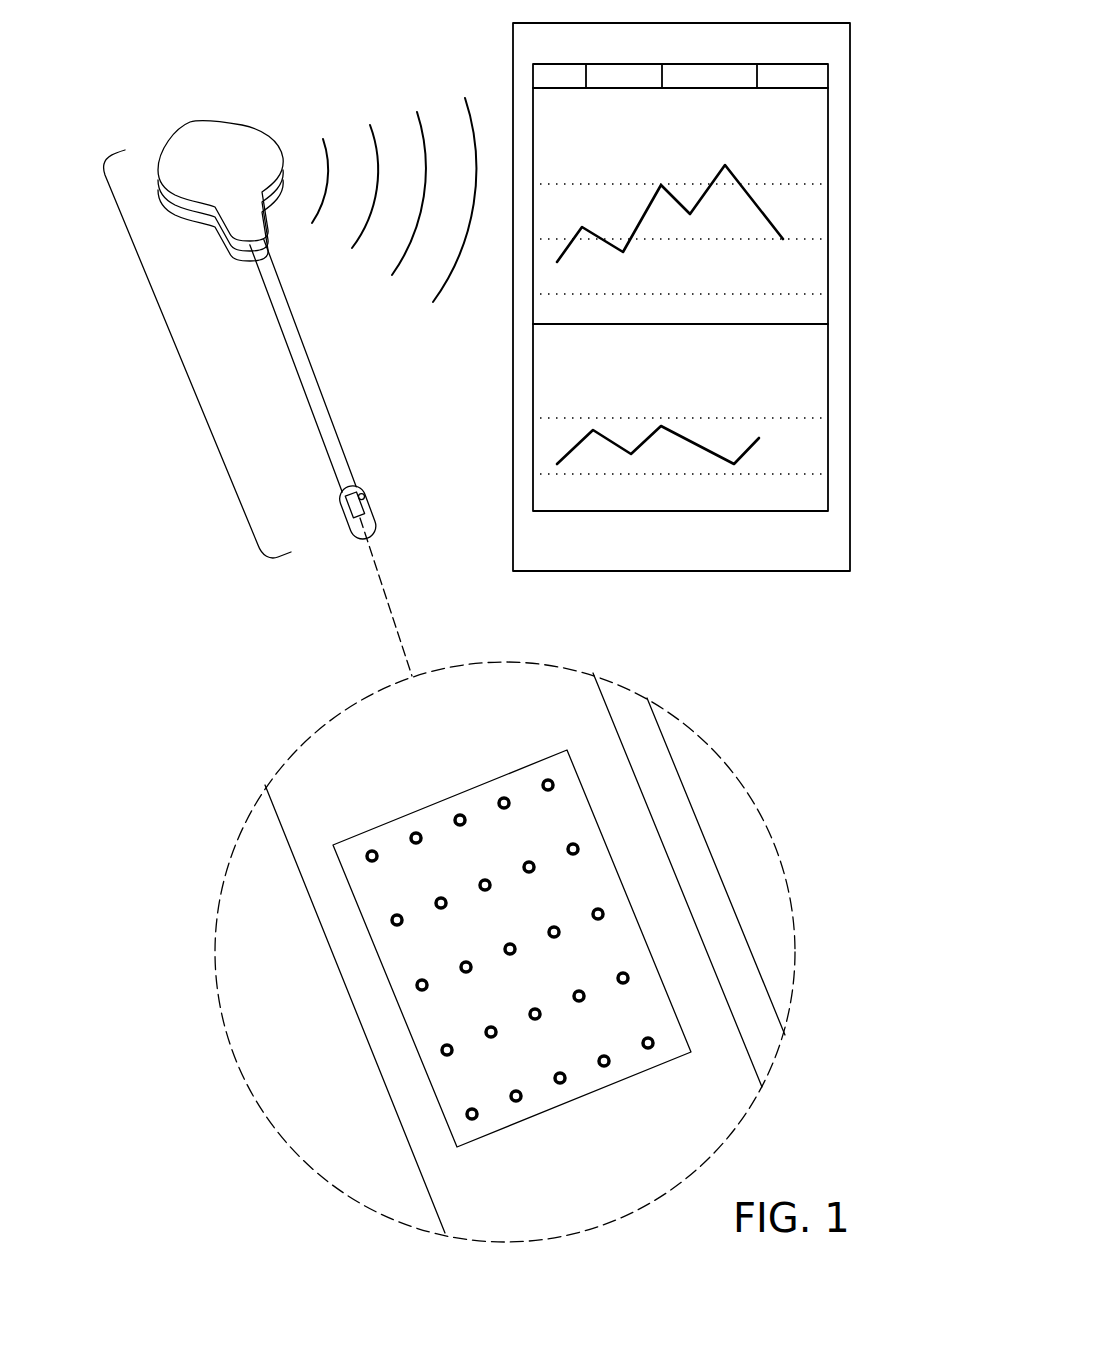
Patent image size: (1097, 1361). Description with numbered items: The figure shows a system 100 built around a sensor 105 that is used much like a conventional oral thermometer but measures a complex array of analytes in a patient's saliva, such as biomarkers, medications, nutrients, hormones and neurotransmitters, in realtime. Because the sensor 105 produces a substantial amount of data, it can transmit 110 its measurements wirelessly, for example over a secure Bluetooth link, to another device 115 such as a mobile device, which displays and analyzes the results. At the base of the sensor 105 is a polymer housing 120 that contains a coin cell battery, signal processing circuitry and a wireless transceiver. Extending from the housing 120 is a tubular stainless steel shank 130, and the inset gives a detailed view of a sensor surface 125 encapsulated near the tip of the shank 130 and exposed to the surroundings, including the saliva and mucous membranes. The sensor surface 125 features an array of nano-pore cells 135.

The system 100 is at (363, 64).
The sensor 105 is at (182, 356).
The transmission 110 is at (375, 139).
The device 115 is at (547, 378).
The polymer housing 120 is at (197, 158).
The sensor surface 125 is at (390, 843).
The tubular stainless steel shank 130 is at (328, 445).
The nano-pore cells 135 is at (566, 1084).